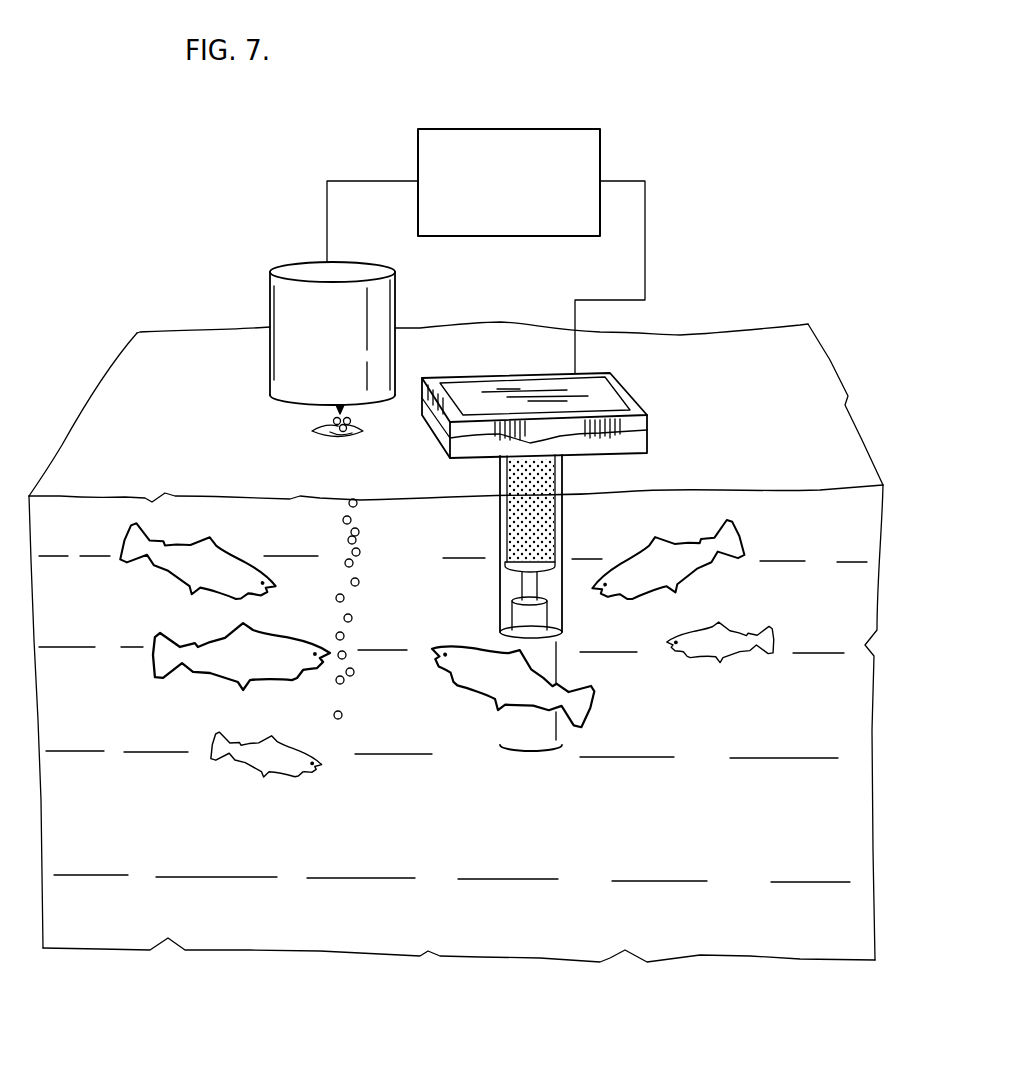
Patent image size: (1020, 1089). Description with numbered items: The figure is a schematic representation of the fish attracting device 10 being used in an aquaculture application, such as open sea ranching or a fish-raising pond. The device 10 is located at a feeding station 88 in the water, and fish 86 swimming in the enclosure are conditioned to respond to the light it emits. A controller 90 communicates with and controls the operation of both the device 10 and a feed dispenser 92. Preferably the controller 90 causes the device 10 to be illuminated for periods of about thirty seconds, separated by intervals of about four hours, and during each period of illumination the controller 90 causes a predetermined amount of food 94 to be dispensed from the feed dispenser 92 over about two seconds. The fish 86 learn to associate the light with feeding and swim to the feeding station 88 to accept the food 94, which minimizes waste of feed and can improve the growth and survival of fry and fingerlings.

The fish attracting device 10 is at (633, 397).
The fish 86 is at (316, 778).
The feeding station 88 is at (689, 273).
The controller 90 is at (492, 216).
The feed dispenser 92 is at (395, 307).
The food 94 is at (362, 580).